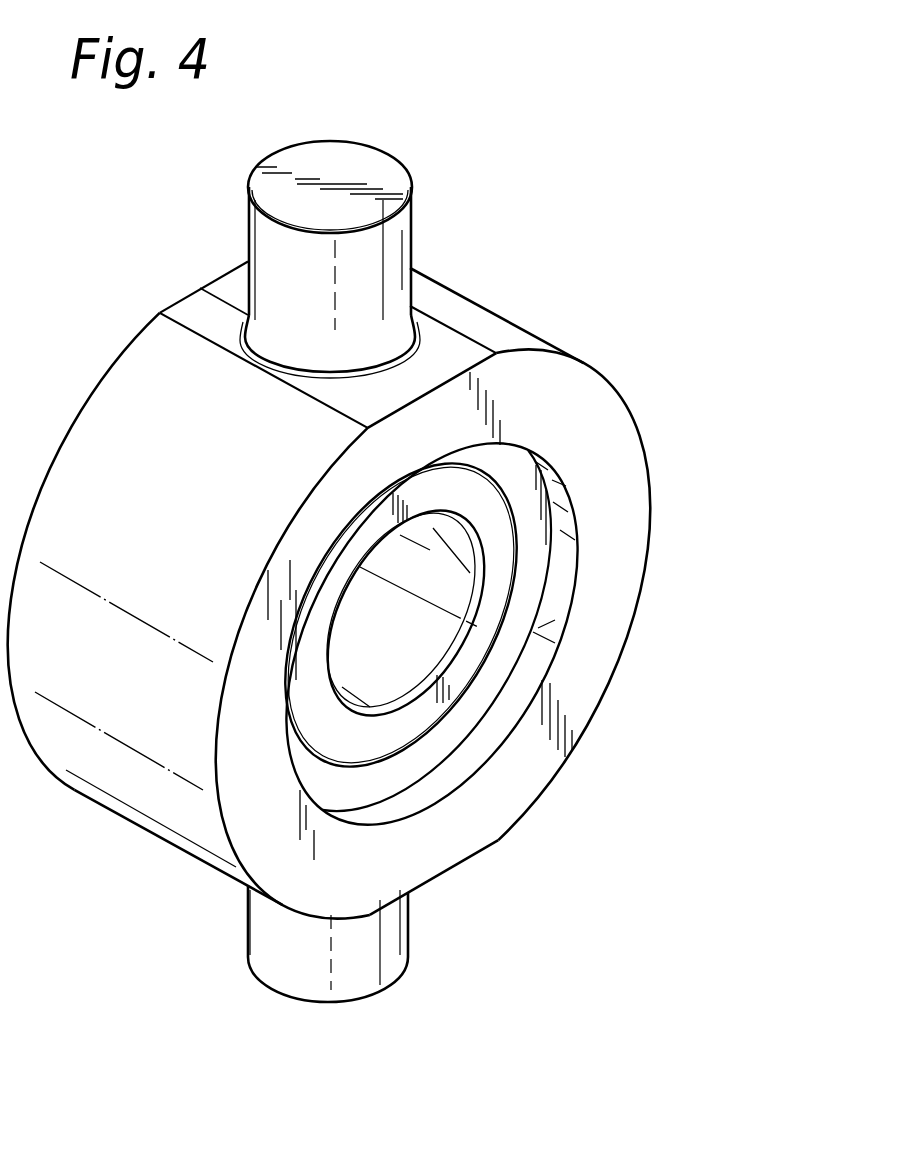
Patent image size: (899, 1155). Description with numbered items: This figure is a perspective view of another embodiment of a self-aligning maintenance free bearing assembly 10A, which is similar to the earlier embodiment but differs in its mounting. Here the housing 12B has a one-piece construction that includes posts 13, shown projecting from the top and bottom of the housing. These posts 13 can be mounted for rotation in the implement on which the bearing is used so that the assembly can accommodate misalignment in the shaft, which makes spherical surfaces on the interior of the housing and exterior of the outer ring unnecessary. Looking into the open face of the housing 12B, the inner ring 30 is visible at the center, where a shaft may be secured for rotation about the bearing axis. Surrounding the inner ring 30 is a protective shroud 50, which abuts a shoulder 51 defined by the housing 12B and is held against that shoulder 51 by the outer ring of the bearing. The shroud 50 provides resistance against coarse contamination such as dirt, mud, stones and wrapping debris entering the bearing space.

The self-aligning maintenance free bearing assembly 10A is at (538, 168).
The housing 12B is at (590, 417).
The posts 13 is at (347, 167).
The protective shroud 50 is at (530, 572).
The shoulder 51 is at (576, 533).
The inner ring 30 is at (478, 630).